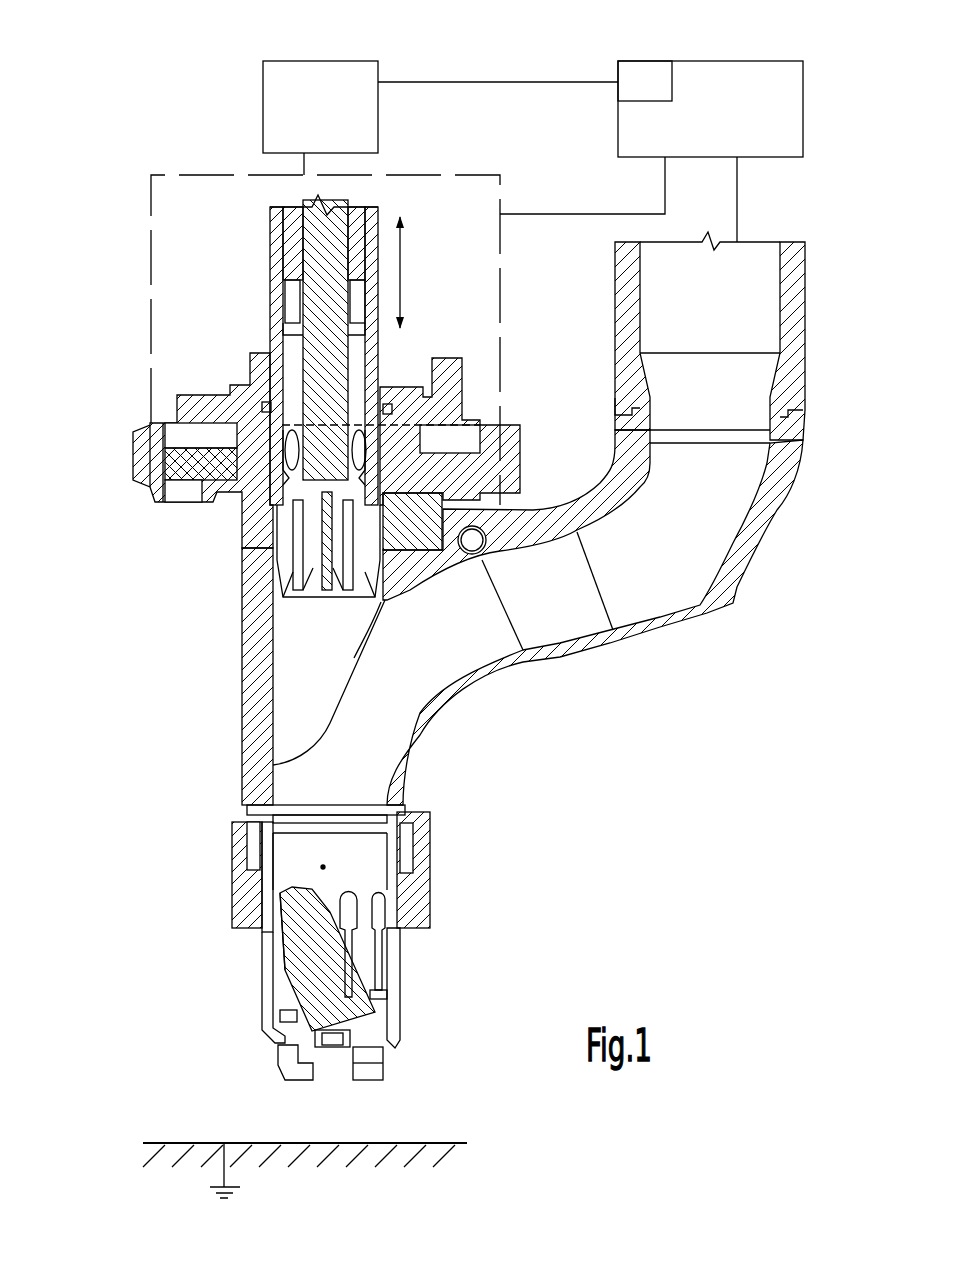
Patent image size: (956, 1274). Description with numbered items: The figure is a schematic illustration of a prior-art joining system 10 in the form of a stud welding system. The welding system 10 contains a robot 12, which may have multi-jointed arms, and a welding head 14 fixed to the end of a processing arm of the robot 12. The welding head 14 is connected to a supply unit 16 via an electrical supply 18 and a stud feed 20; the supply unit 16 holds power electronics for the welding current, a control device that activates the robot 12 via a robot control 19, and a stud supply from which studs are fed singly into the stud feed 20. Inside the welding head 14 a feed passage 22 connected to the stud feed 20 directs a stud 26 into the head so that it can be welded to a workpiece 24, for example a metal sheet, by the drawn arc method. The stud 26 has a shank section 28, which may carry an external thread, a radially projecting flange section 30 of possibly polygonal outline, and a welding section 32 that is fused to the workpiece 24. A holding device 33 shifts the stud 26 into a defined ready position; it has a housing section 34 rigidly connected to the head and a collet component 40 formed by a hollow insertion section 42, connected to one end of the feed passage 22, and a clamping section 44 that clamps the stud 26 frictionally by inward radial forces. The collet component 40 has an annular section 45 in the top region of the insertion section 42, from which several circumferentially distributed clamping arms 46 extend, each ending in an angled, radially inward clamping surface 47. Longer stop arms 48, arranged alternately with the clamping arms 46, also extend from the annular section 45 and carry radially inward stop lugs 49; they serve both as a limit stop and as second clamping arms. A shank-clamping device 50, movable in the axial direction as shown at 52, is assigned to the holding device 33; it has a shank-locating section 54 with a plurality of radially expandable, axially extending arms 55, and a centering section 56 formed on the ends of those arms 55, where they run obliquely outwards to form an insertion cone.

The joining system 10 is at (125, 165).
The robot 12 is at (302, 115).
The welding head 14 is at (150, 307).
The supply unit 16 is at (687, 137).
The electrical supply 18 is at (662, 192).
The robot control 19 is at (632, 95).
The stud feed 20 is at (739, 200).
The feed passage 22 is at (633, 578).
The workpiece 24 is at (175, 1140).
The stud 26 is at (280, 970).
The shank section 28 is at (340, 953).
The flange section 30 is at (386, 995).
The welding section 32 is at (335, 1048).
The holding device 33 is at (445, 868).
The housing section 34 is at (250, 807).
The collet component 40 is at (262, 946).
The insertion section 42 is at (512, 815).
The clamping section 44 is at (512, 1035).
The annular section 45 is at (323, 867).
The clamping arms 46 is at (272, 987).
The clamping surfaces 47 is at (280, 1047).
The stop arms 48 is at (364, 1030).
The stop lugs 49 is at (365, 1073).
The shank-clamping device 50 is at (266, 290).
The axial direction 52 is at (403, 287).
The shank-locating section 54 is at (242, 572).
The radially expandable arms 55 is at (372, 520).
The centering section 56 is at (242, 593).